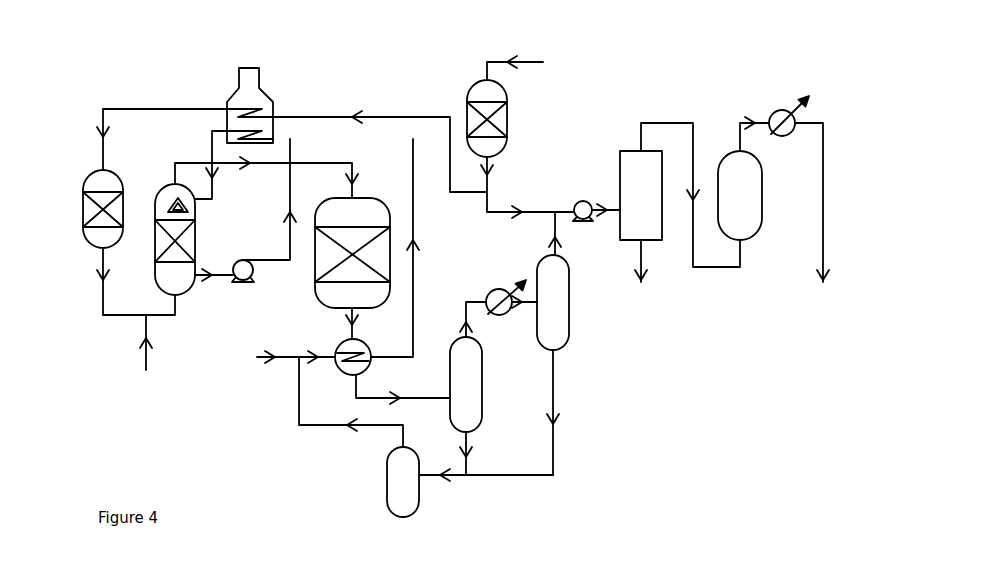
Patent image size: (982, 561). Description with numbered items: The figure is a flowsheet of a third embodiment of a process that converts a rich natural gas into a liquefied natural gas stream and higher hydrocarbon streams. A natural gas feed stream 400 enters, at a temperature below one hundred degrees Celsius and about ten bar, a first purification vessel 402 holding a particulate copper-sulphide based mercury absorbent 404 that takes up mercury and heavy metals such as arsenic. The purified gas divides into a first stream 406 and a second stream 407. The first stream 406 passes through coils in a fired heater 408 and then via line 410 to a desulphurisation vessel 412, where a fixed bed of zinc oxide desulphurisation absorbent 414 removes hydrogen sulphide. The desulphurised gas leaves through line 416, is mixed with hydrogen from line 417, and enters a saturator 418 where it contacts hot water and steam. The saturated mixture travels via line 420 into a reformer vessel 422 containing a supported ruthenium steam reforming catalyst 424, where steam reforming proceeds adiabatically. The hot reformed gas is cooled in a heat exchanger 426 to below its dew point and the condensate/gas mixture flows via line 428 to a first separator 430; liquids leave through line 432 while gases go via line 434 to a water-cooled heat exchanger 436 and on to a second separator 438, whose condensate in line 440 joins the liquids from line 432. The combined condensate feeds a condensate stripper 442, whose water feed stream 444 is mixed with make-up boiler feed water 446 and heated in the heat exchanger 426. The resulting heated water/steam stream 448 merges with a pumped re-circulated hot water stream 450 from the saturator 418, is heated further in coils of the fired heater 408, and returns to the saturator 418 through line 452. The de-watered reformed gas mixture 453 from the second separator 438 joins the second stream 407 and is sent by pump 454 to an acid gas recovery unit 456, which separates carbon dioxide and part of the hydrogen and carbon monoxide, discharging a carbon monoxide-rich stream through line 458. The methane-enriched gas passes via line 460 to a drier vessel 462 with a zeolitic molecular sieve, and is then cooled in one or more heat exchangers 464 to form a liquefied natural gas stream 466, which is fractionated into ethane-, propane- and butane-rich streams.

The natural gas feed stream 400 is at (523, 62).
The first purification vessel 402 is at (506, 91).
The mercury absorbent 404 is at (503, 121).
The first stream 406 is at (392, 117).
The second stream 407 is at (507, 214).
The fired heater 408 is at (260, 92).
The line 410 is at (133, 109).
The desulphurisation vessel 412 is at (86, 181).
The zinc oxide desulphurisation absorbent 414 is at (90, 215).
The line 416 is at (102, 305).
The hydrogen stream line 417 is at (146, 350).
The saturator 418 is at (172, 190).
The line 420 is at (345, 163).
The reformer vessel 422 is at (392, 198).
The supported ruthenium steam reforming catalyst 424 is at (323, 274).
The heat exchanger 426 is at (366, 347).
The line 428 is at (354, 398).
The first separator 430 is at (484, 362).
The line 432 is at (470, 440).
The line 434 is at (477, 299).
The water-cooled heat exchanger 436 is at (497, 290).
The second separator 438 is at (570, 288).
The line 440 is at (556, 400).
The condensate stripper 442 is at (390, 472).
The water feed stream 444 is at (299, 412).
The make-up boiler feed water 446 is at (268, 357).
The heated water/steam stream 448 is at (415, 215).
The pumped re-circulated hot water stream 450 is at (288, 202).
The line 452 is at (212, 150).
The de-watered reformed gas mixture 453 is at (558, 229).
The pump 454 is at (575, 205).
The acid gas recovery unit 456 is at (620, 163).
The line 458 is at (645, 268).
The line 460 is at (668, 122).
The drier vessel 462 is at (763, 178).
The heat exchangers 464 is at (771, 118).
The liquefied natural gas stream 466 is at (824, 212).